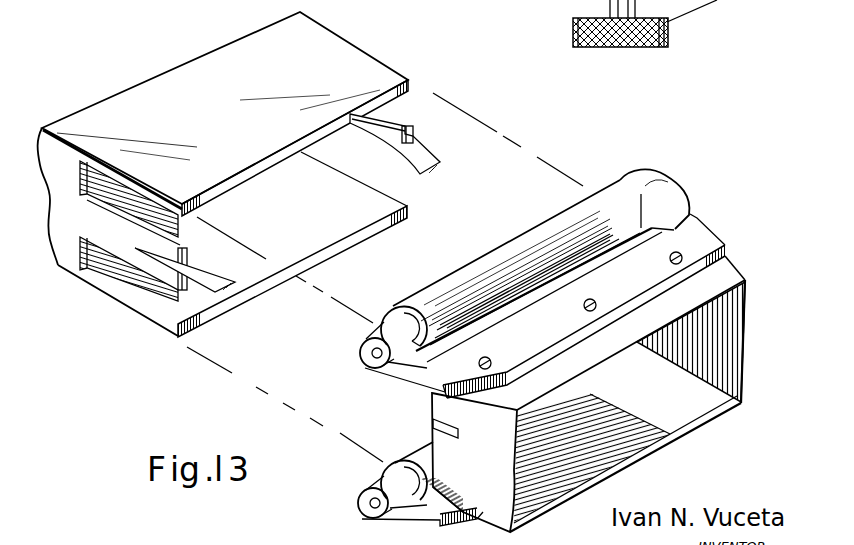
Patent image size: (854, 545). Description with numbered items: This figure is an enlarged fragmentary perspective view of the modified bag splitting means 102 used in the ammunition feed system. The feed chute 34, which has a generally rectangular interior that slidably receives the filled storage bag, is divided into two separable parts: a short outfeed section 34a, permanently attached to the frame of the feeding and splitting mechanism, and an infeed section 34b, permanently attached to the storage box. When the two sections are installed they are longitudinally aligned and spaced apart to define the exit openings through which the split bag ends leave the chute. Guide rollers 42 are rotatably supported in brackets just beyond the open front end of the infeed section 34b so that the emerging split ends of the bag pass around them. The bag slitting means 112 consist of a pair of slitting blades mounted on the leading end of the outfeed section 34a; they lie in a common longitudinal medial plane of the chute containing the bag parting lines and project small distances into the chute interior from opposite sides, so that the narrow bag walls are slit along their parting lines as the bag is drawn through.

The feed chute 34 is at (588, 350).
The outfeed section 34a is at (262, 188).
The infeed section 34b is at (743, 377).
The guide rollers 42 is at (473, 263).
The bag splitting means 102 is at (184, 309).
The bag slitting means 112 is at (405, 174).